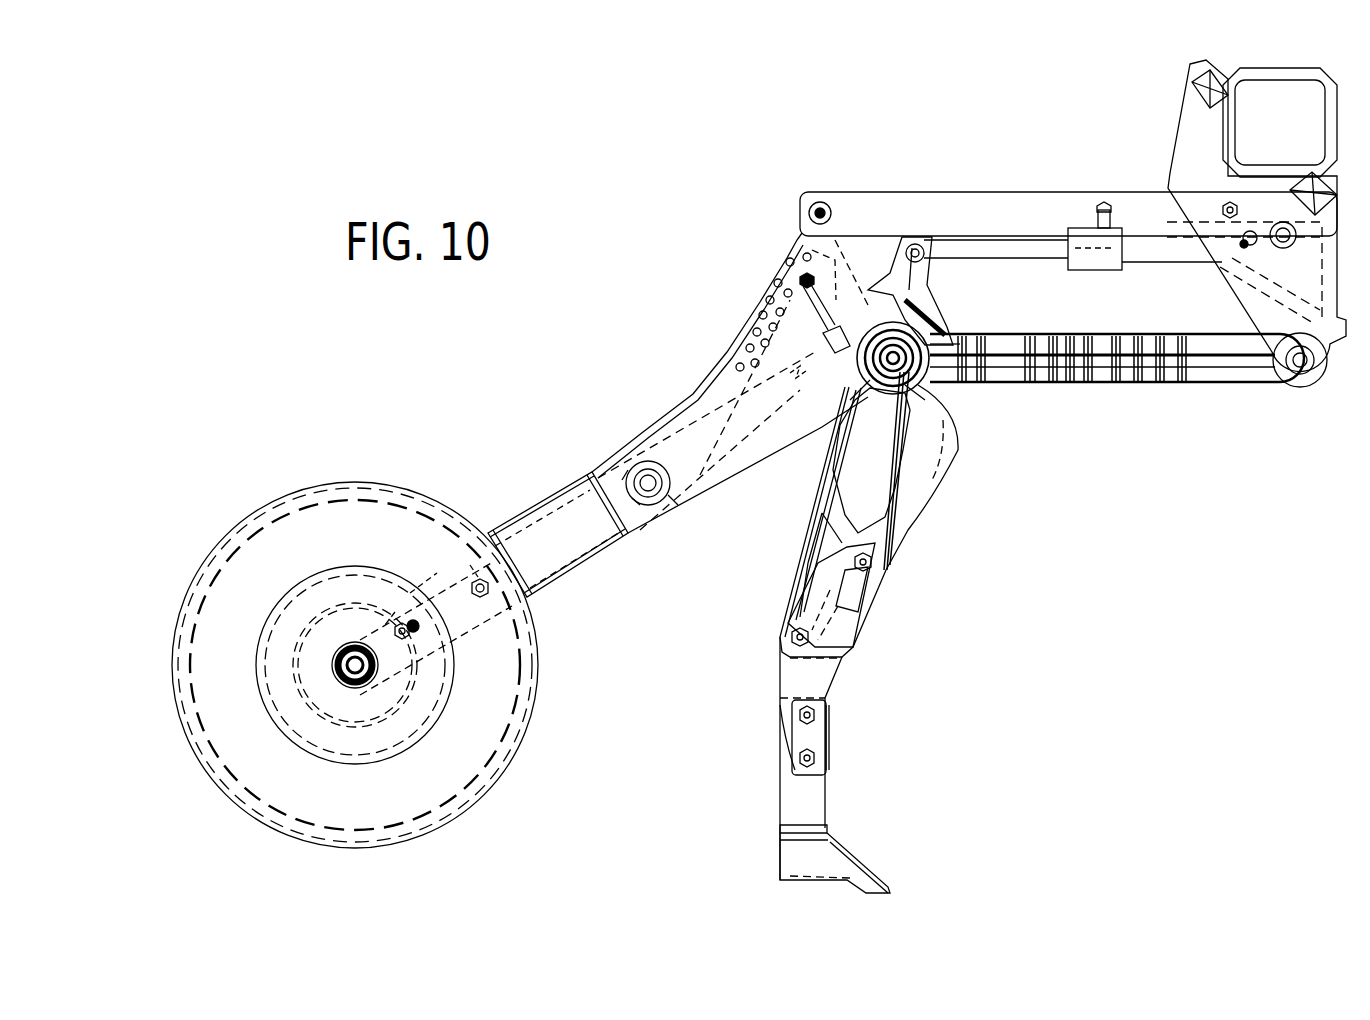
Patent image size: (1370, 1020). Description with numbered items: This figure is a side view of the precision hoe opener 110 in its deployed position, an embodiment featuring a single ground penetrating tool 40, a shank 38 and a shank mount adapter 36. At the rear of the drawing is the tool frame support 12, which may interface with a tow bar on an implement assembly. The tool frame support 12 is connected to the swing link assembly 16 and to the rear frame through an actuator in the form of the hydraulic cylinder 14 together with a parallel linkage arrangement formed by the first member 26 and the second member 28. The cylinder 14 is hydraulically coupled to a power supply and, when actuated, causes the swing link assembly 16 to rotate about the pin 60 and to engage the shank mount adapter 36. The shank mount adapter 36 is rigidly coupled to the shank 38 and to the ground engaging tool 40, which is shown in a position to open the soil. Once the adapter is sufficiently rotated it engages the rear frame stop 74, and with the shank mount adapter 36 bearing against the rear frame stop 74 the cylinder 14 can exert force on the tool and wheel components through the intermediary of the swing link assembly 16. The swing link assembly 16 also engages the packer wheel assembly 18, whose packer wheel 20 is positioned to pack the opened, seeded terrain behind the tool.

The precision hoe opener 110 is at (736, 206).
The tool frame support 12 is at (1190, 130).
The hydraulic cylinder 14 is at (1125, 245).
The first member 26 is at (940, 200).
The swing link assembly 16 is at (920, 300).
The rear frame stop 74 is at (830, 333).
The pin 60 is at (935, 378).
The second member 28 is at (1222, 375).
The packer wheel 20 is at (246, 470).
The shank mount adapter 36 is at (826, 495).
The packer wheel assembly 18 is at (555, 558).
The shank 38 is at (812, 677).
The ground engaging tool 40 is at (790, 853).